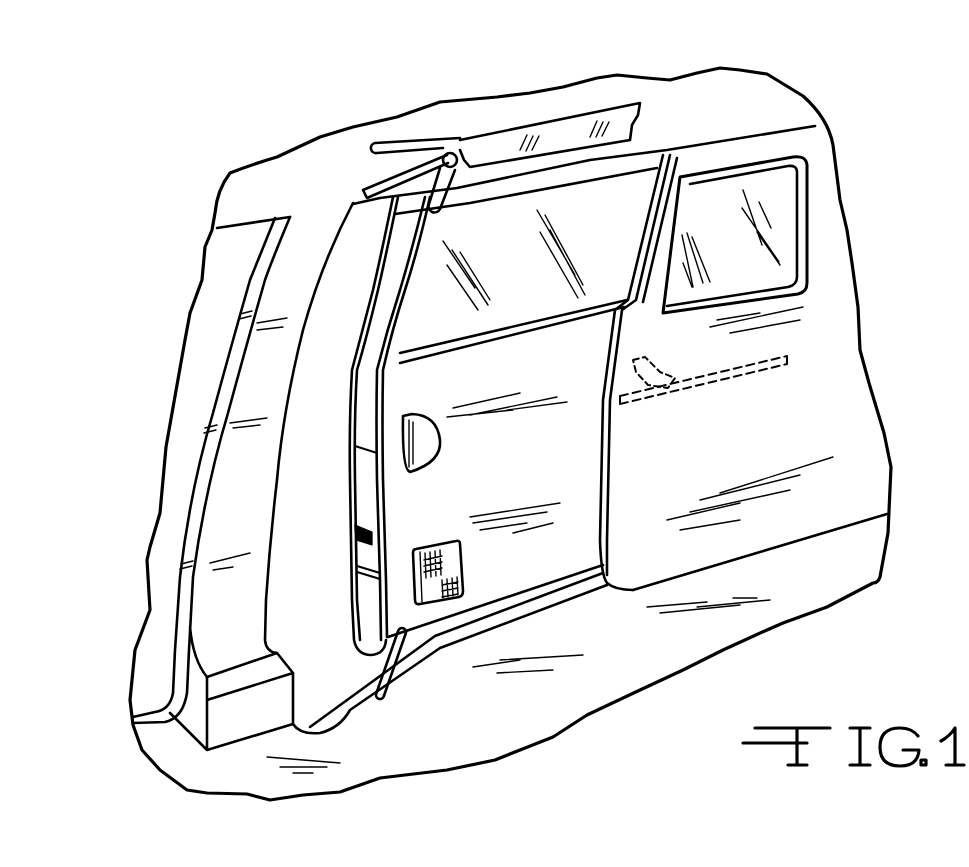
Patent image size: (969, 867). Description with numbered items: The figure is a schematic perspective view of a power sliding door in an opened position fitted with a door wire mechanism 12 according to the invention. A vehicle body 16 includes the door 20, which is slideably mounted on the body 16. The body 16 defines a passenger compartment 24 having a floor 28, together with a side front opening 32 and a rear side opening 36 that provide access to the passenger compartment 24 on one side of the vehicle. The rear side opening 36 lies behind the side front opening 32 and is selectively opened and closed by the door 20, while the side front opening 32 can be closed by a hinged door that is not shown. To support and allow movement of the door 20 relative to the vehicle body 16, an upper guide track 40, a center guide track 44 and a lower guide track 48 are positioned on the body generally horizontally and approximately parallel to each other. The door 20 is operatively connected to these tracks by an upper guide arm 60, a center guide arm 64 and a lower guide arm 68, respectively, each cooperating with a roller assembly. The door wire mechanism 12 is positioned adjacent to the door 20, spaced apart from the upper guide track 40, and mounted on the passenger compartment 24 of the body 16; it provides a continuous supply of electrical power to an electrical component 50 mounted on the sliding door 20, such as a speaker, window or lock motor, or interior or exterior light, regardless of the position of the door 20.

The door wire mechanism 12 is at (457, 116).
The passenger compartment 24 is at (758, 122).
The upper guide track 40 is at (374, 189).
The upper guide arm 60 is at (452, 205).
The vehicle body 16 is at (227, 232).
The side front opening 32 is at (213, 410).
The rear side opening 36 is at (282, 479).
The electrical component 50 is at (437, 543).
The door 20 is at (553, 593).
The lower guide arm 68 is at (382, 665).
The lower guide track 48 is at (437, 660).
The floor 28 is at (548, 708).
The center guide track 44 is at (727, 382).
The center guide arm 64 is at (657, 353).